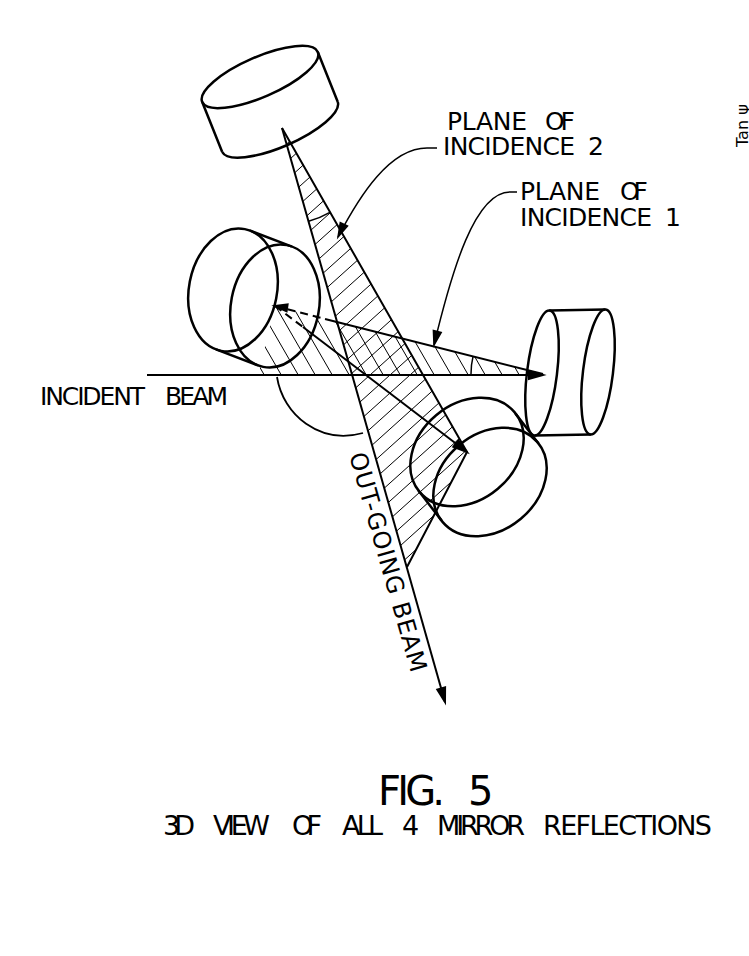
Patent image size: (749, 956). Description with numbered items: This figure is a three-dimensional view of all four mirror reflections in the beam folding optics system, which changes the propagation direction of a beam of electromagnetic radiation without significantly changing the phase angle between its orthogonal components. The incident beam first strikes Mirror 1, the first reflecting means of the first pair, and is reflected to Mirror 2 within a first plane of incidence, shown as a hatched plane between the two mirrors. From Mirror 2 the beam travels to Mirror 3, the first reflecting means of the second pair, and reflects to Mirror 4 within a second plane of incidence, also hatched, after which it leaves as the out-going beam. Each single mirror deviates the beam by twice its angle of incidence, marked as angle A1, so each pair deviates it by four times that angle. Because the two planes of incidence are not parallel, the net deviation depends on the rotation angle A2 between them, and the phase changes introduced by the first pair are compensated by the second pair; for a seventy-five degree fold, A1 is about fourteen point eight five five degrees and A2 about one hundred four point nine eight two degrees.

The Mirror 1 is at (634, 373).
The Mirror 2 is at (191, 298).
The Mirror 3 is at (526, 466).
The Mirror 4 is at (224, 95).
The angle A1 is at (314, 187).
The rotation angle A2 is at (318, 408).